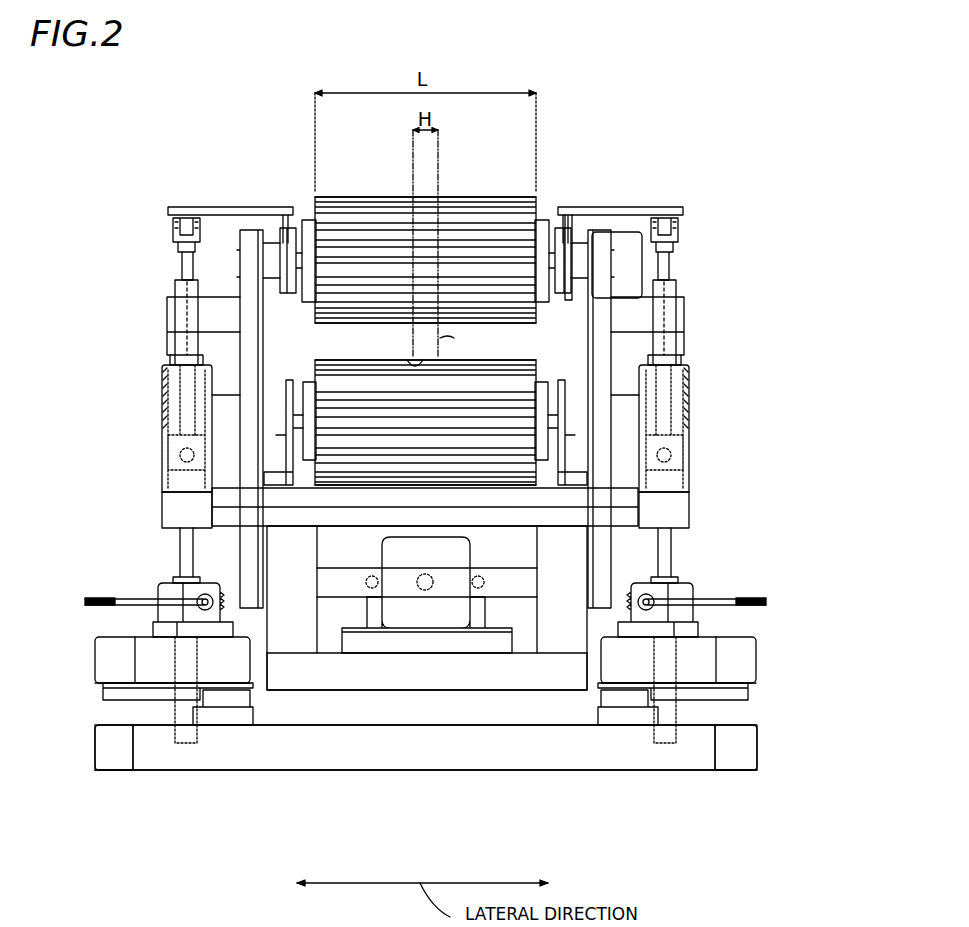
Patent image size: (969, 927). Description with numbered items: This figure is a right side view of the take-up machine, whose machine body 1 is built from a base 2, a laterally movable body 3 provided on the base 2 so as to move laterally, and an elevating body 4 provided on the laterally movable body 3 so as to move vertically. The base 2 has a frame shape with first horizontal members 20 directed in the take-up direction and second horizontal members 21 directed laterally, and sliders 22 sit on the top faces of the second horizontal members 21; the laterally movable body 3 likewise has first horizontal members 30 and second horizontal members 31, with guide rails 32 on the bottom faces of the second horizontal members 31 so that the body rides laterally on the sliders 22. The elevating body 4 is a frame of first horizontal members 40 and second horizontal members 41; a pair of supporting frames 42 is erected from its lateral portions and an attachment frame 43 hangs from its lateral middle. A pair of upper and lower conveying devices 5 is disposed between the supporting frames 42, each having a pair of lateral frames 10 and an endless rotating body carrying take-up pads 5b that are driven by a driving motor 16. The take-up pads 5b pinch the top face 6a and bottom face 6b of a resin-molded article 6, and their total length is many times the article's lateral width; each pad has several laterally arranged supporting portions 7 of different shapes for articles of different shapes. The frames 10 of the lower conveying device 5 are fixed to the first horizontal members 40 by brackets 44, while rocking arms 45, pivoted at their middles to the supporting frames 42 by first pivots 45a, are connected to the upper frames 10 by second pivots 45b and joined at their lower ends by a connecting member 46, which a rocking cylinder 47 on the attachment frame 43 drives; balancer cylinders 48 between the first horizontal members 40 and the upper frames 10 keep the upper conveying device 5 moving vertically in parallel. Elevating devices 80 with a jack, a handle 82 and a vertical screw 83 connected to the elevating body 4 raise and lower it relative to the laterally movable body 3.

The machine body 1 is at (95, 707).
The base 2 is at (95, 748).
The laterally movable body 3 is at (95, 660).
The elevating body 4 is at (160, 489).
The conveying device 5 is at (540, 185).
The take-up pad 5b is at (380, 198).
The resin-molded article 6 is at (447, 340).
The top face 6a is at (478, 343).
The bottom face 6b is at (410, 358).
The supporting portion 7 is at (343, 198).
The lateral frame 10 is at (288, 228).
The driving motor 16 is at (628, 235).
The first horizontal member 20 is at (110, 762).
The second horizontal member 21 is at (285, 758).
The slider 22 is at (220, 700).
The first horizontal member 30 is at (115, 647).
The second horizontal member 31 is at (700, 677).
The guide rail 32 is at (155, 690).
The first horizontal member 40 is at (170, 510).
The second horizontal member 41 is at (322, 508).
The supporting frame 42 is at (165, 418).
The attachment frame 43 is at (342, 680).
The bracket 44 is at (282, 470).
The rocking arm 45 is at (250, 230).
The first pivot 45a is at (168, 298).
The second pivot 45b is at (240, 260).
The connecting member 46 is at (522, 590).
The rocking cylinder 47 is at (428, 617).
The balancer cylinder 48 is at (165, 385).
The elevating device 80 is at (163, 585).
The handle 82 is at (100, 597).
The vertical screw 83 is at (195, 560).